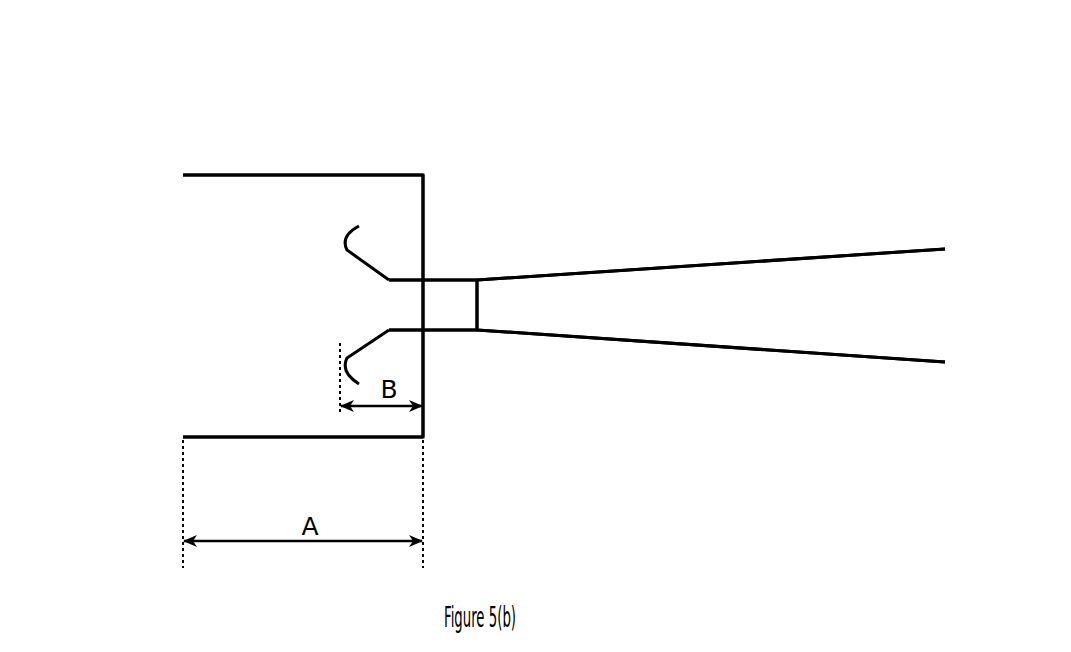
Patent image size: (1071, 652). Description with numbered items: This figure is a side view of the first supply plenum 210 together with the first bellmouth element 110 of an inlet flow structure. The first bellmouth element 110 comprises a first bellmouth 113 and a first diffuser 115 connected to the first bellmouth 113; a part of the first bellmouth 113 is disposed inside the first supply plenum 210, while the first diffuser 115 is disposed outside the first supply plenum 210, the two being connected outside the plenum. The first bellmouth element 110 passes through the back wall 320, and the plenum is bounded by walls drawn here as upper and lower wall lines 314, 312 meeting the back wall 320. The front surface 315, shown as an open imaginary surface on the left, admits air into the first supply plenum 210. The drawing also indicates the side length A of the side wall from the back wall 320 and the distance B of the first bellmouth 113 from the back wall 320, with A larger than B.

The first supply plenum 210 is at (203, 122).
The upper wall 314 is at (320, 172).
The lower wall 312 is at (318, 436).
The back wall 320 is at (427, 375).
The front surface 315 is at (172, 248).
The first bellmouth element 110 is at (472, 110).
The first bellmouth 113 is at (445, 280).
The first diffuser 115 is at (600, 258).